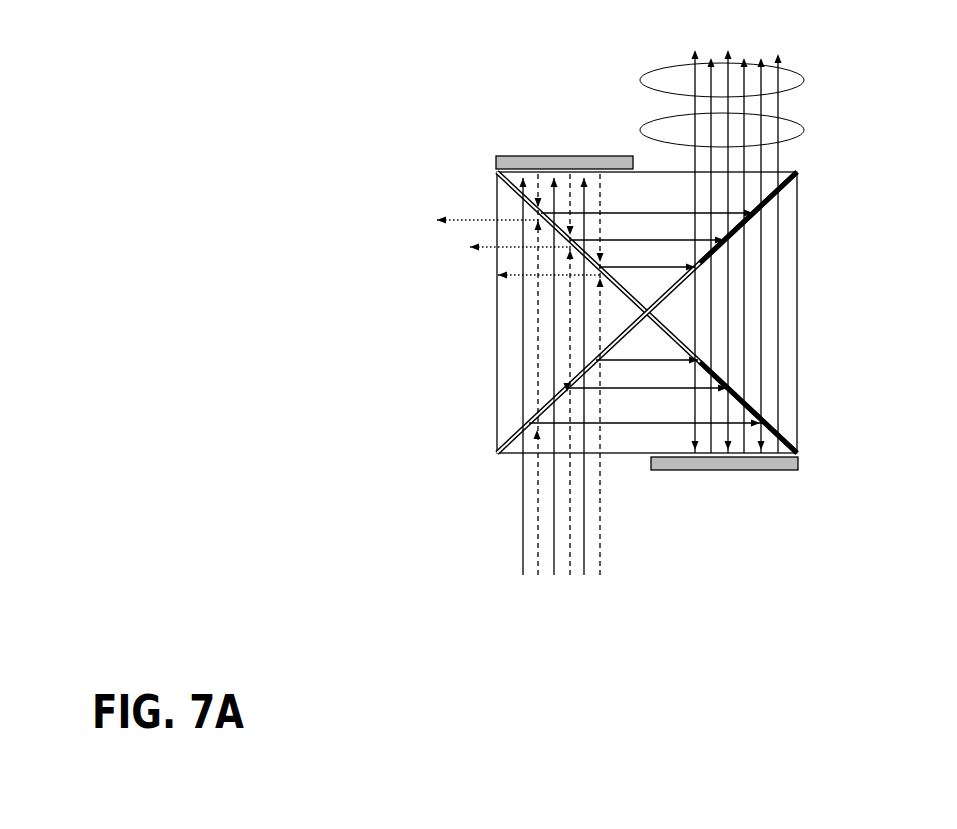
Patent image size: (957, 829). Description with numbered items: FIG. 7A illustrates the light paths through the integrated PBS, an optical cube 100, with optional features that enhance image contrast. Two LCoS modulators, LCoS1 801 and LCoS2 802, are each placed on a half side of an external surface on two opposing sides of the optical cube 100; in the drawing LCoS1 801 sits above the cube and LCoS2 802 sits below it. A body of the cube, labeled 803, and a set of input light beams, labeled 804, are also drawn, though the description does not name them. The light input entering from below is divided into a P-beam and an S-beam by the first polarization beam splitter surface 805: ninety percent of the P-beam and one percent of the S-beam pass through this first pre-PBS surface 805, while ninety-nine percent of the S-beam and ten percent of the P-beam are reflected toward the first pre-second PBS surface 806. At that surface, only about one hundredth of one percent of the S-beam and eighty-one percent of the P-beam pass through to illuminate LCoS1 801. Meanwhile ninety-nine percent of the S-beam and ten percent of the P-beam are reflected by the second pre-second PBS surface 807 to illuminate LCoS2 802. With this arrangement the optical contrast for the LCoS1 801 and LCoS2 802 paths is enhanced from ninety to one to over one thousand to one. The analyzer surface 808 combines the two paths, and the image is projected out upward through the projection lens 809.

The integrated PBS 100 is at (656, 324).
The LCoS1 801 is at (507, 163).
The LCoS2 802 is at (767, 464).
The polarizing beam splitter cube 803 is at (642, 245).
The input light beams 804 is at (633, 453).
The first polarization beam splitter surface 805 is at (522, 424).
The first pre-second PBS surface 806 is at (538, 210).
The second pre-second PBS surface 807 is at (758, 408).
The analyzer surface 808 is at (766, 207).
The projection lens 809 is at (830, 76).